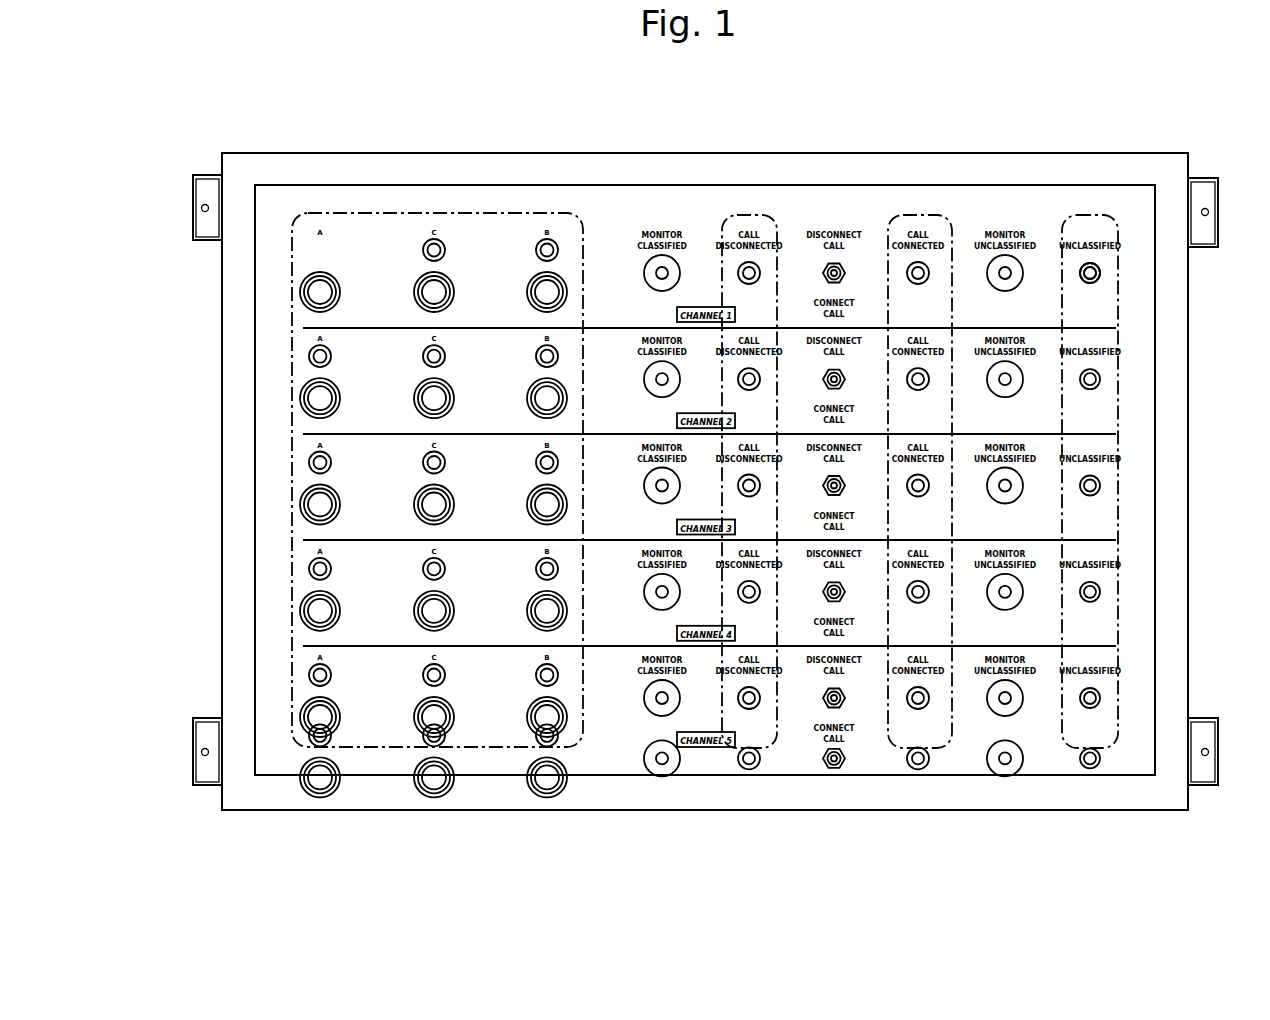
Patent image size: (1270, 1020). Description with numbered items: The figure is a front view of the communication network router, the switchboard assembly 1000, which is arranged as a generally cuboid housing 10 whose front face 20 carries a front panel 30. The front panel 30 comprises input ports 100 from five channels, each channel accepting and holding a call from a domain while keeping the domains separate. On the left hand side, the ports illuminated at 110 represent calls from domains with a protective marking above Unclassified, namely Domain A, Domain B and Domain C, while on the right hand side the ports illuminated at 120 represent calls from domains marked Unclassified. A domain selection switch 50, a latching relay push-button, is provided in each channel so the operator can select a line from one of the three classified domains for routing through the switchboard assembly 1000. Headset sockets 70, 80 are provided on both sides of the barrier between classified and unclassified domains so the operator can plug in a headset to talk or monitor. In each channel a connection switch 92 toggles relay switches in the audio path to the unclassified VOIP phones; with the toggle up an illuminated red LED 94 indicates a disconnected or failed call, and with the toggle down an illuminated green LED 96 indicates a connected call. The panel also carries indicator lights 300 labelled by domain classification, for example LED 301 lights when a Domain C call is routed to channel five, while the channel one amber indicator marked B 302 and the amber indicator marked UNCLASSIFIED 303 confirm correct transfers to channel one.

The switchboard assembly 1000 is at (541, 98).
The housing 10 is at (1057, 145).
The front face 20 is at (275, 165).
The front panel 30 is at (435, 198).
The input ports 100 is at (315, 291).
The domain selection switch 50 is at (540, 292).
The amber indicator marked 'B' 302 is at (544, 251).
The headset socket 70 is at (662, 275).
The red LED 94 is at (752, 278).
The connection switch 92 is at (836, 275).
The green LED 96 is at (918, 276).
The headset socket 80 is at (1005, 275).
The ports illuminated for unclassified domains 120 is at (1093, 272).
The amber indicator marked 'UNCLASSIFIED' 303 is at (1094, 278).
The indicator lights 300 is at (316, 676).
The LED 301 is at (437, 677).
The ports illuminated for classified domains 110 is at (323, 718).